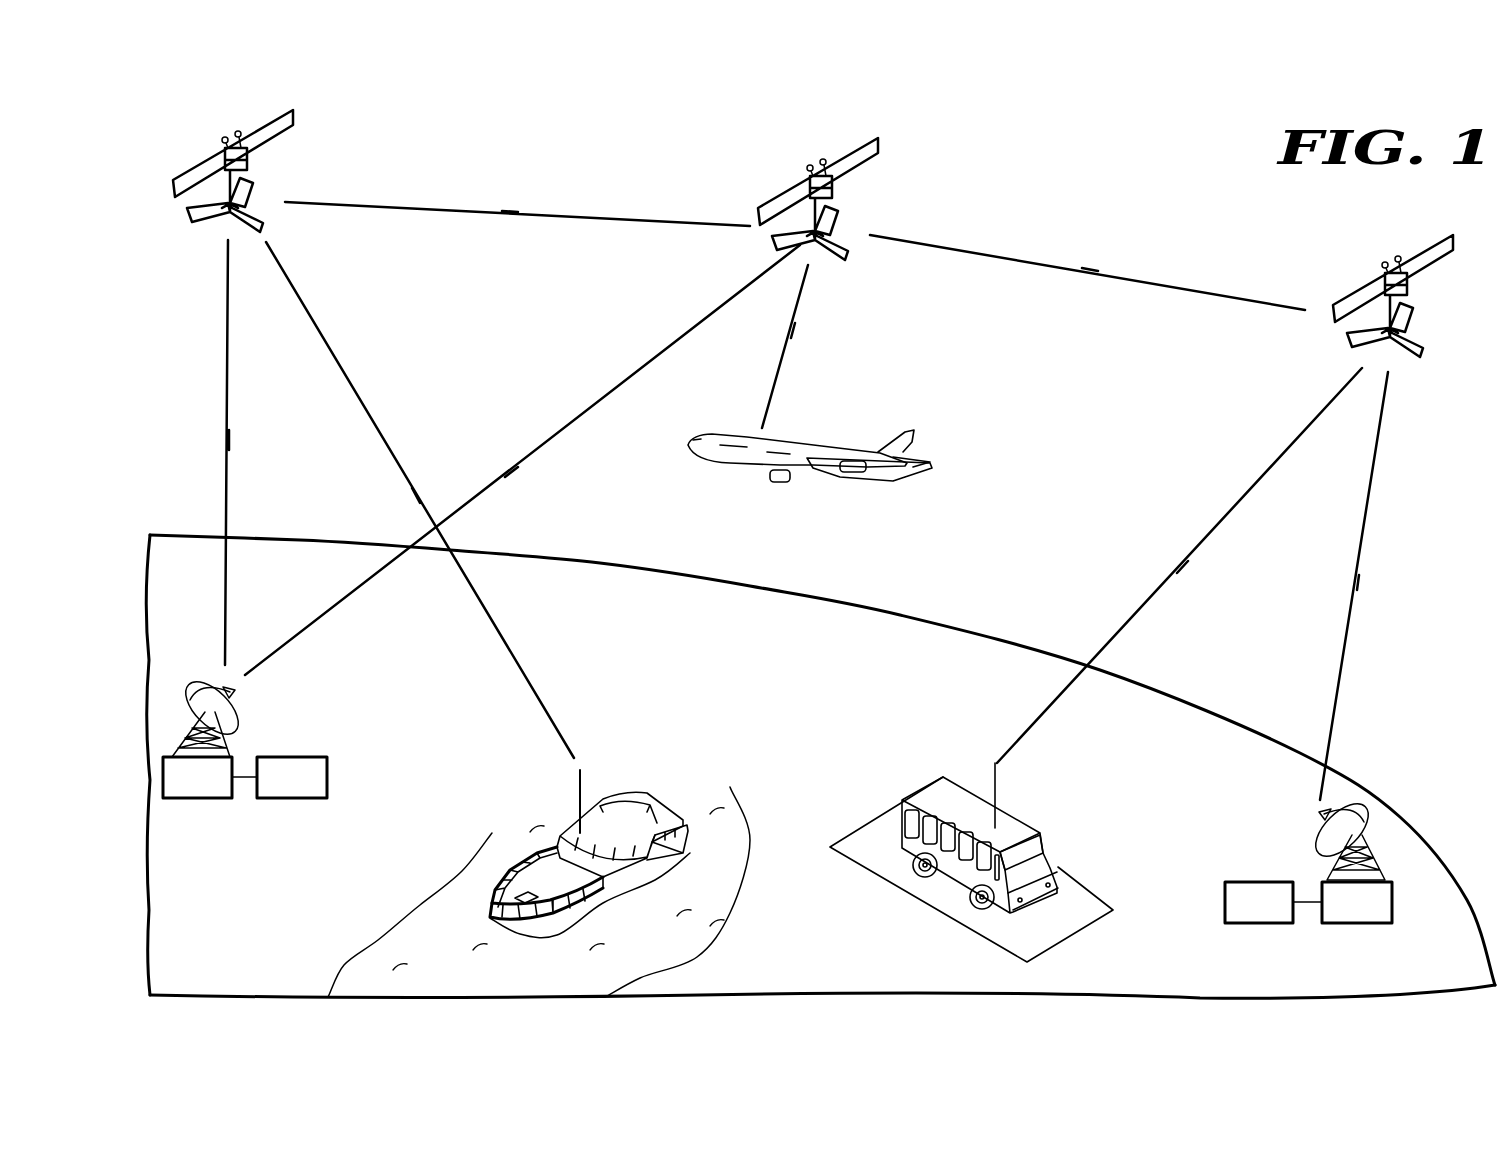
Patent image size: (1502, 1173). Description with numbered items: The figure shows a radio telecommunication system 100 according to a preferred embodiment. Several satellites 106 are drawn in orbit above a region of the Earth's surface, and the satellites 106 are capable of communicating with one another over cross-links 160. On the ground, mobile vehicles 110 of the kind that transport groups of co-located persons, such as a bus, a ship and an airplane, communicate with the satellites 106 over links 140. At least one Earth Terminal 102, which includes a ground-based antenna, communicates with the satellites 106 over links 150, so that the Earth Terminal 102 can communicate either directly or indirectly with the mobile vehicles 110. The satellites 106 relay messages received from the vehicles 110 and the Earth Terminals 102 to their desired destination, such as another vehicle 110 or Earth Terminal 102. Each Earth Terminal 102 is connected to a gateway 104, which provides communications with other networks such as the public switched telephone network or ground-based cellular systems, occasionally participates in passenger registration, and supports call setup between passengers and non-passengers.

The radio telecommunication system 100 is at (1207, 201).
The Earth Terminal 102 is at (200, 800).
The gateway 104 is at (292, 800).
The satellite 106 is at (270, 142).
The mobile vehicle 110 is at (728, 465).
The link 140 is at (332, 352).
The link 150 is at (228, 340).
The cross-link 160 is at (795, 235).